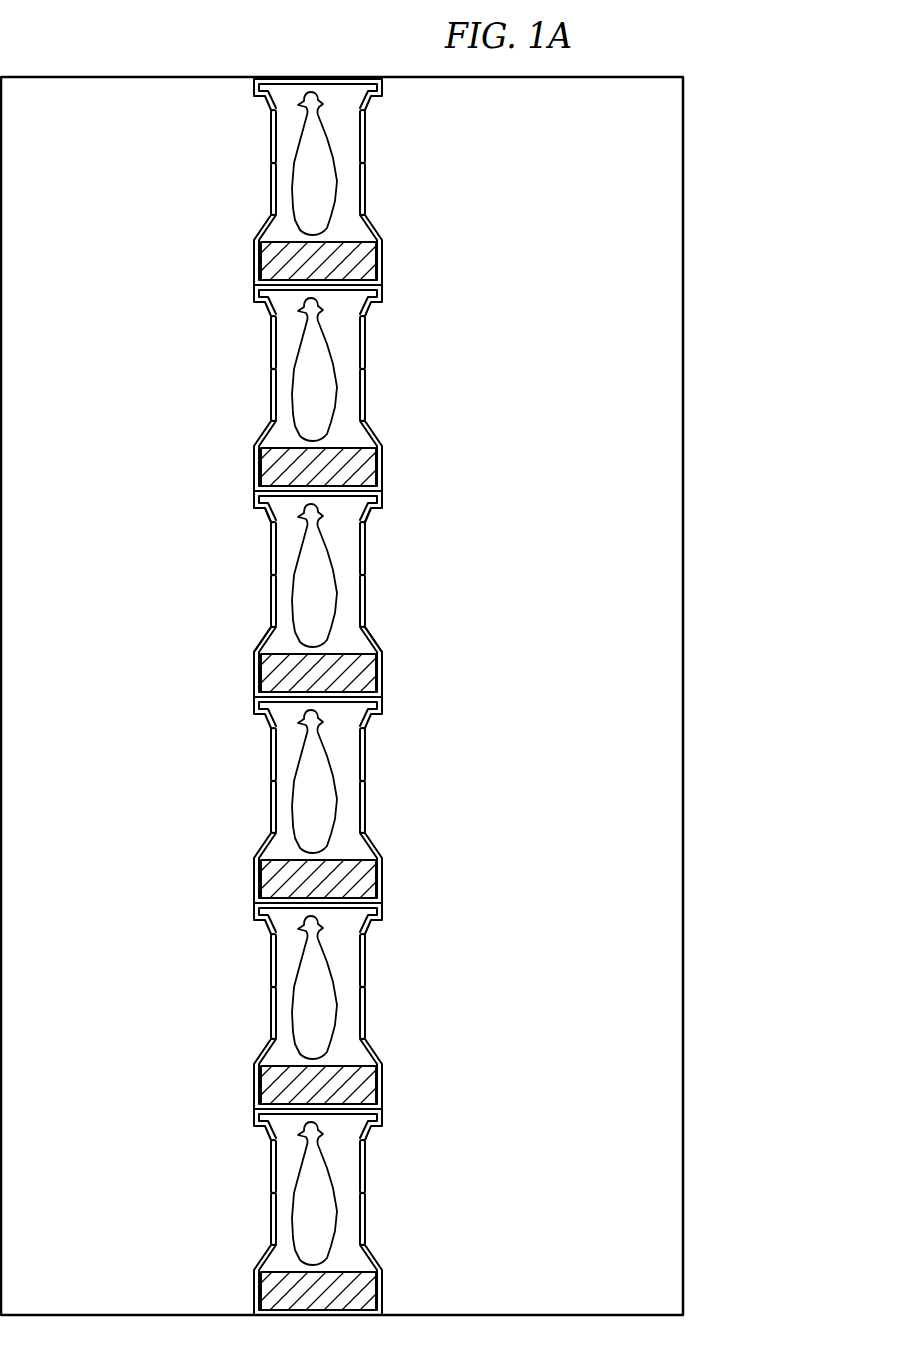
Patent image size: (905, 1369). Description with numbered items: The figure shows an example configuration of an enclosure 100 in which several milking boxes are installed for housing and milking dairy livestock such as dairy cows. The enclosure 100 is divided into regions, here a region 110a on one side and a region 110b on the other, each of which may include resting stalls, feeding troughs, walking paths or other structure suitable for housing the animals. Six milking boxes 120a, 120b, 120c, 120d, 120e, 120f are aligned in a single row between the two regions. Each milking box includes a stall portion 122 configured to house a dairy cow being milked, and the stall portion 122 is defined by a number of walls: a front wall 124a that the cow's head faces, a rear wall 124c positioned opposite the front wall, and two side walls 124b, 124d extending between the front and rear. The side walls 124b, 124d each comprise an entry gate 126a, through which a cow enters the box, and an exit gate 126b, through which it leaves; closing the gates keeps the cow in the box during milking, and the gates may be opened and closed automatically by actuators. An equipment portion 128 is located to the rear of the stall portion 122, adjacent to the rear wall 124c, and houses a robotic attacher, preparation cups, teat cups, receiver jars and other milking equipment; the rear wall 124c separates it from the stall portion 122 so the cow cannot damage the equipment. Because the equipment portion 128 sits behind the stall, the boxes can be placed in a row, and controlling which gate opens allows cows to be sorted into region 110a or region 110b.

The enclosure 100 is at (86, 49).
The region 110a is at (103, 387).
The region 110b is at (580, 387).
The milking box 120a is at (224, 163).
The milking box 120b is at (224, 365).
The milking box 120c is at (224, 515).
The milking box 120d is at (224, 775).
The milking box 120e is at (224, 992).
The milking box 120f is at (224, 1193).
The stall portion 122 is at (366, 575).
The wall 124a is at (237, 486).
The wall 124b is at (409, 501).
The wall 124c is at (410, 662).
The wall 124d is at (225, 665).
The entry gate 126a is at (320, 601).
The exit gate 126b is at (320, 554).
The equipment portion 128 is at (336, 673).